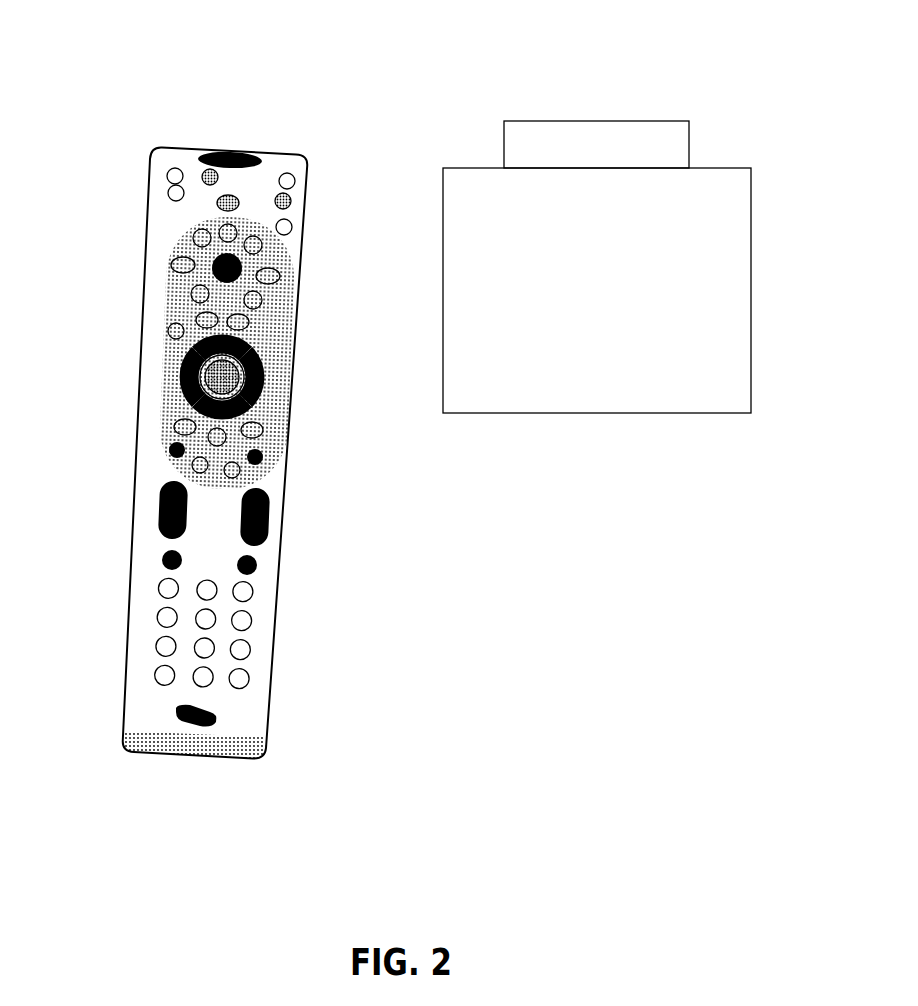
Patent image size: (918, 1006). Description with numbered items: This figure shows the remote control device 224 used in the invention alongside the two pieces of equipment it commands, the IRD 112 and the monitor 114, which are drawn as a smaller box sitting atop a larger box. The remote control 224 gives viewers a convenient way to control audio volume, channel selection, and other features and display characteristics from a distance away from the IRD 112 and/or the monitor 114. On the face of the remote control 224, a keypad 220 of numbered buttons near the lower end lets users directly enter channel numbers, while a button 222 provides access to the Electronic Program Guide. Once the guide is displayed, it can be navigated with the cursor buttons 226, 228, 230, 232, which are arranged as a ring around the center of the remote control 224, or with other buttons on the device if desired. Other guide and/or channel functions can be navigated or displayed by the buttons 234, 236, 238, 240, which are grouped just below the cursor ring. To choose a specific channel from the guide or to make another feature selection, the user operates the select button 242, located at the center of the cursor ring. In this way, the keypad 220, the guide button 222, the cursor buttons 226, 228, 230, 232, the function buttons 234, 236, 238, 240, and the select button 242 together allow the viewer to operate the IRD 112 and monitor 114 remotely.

The IRD 112 is at (597, 120).
The monitor 114 is at (751, 290).
The keypad 220 is at (252, 697).
The button 222 is at (170, 332).
The remote control device 224 is at (228, 137).
The cursor button 226 is at (250, 340).
The cursor button 228 is at (268, 392).
The cursor button 230 is at (198, 410).
The cursor button 232 is at (177, 382).
The button 234 is at (168, 452).
The button 236 is at (193, 467).
The button 238 is at (263, 460).
The button 240 is at (238, 470).
The select button 242 is at (224, 375).